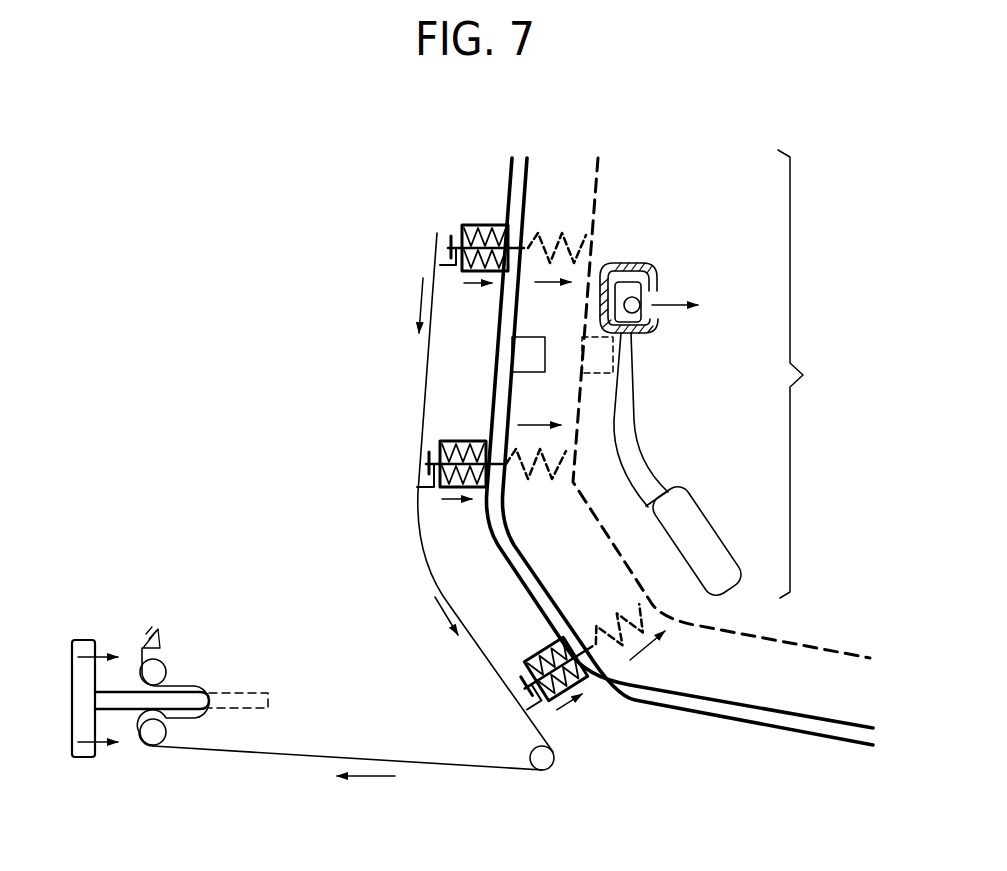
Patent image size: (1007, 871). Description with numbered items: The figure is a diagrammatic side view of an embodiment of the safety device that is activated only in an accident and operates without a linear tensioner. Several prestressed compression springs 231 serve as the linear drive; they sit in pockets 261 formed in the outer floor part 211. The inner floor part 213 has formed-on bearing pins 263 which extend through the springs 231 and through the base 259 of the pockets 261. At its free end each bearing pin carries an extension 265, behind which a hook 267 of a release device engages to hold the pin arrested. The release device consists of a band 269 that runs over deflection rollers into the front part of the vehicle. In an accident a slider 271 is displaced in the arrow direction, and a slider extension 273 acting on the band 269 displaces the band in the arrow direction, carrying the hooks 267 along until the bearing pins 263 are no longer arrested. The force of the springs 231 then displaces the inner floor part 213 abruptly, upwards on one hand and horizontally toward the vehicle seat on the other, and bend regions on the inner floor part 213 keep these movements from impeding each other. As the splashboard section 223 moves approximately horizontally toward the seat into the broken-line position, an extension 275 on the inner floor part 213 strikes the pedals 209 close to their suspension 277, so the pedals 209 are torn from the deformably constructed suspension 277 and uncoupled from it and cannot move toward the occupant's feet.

The pedals 209 is at (702, 542).
The outer floor part 211 is at (808, 737).
The inner floor part 213 is at (838, 652).
The splashboard section 223 is at (814, 374).
The compression springs 231 is at (468, 224).
The base 259 is at (462, 228).
The pockets 261 is at (487, 224).
The bearing pins 263 is at (504, 227).
The extension 265 is at (450, 248).
The hook 267 is at (454, 264).
The band 269 is at (425, 397).
The slider 271 is at (80, 640).
The slider extension 273 is at (183, 698).
The extension 275 is at (533, 372).
The suspension 277 is at (670, 292).